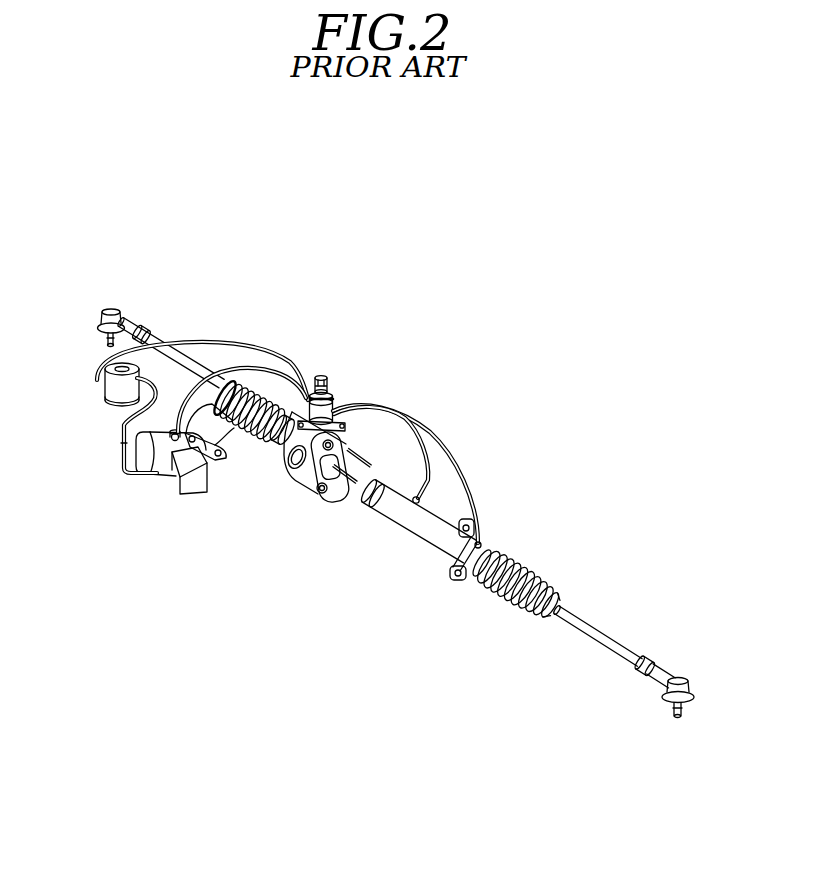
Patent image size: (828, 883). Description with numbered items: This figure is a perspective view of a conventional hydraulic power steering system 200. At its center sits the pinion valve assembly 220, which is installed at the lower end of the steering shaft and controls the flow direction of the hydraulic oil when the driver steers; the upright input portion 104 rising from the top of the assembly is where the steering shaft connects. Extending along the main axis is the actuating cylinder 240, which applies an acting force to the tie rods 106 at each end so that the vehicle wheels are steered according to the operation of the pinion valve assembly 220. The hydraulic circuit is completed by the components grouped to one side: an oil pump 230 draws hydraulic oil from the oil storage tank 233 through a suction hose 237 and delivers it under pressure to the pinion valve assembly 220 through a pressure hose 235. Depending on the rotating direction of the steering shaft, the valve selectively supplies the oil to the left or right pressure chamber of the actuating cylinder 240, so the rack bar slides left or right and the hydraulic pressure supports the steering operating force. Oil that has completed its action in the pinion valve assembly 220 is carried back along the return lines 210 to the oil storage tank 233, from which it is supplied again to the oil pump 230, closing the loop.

The hydraulic power steering system 200 is at (303, 552).
The input shaft 104 is at (318, 377).
The tie rods 106 is at (600, 636).
The hydraulic pipe 210 is at (417, 425).
The pinion valve assembly 220 is at (333, 397).
The oil pump 230 is at (157, 482).
The oil storage tank 233 is at (107, 389).
The pressure hose 235 is at (224, 453).
The suction hose 237 is at (123, 467).
The actuating cylinder 240 is at (432, 538).